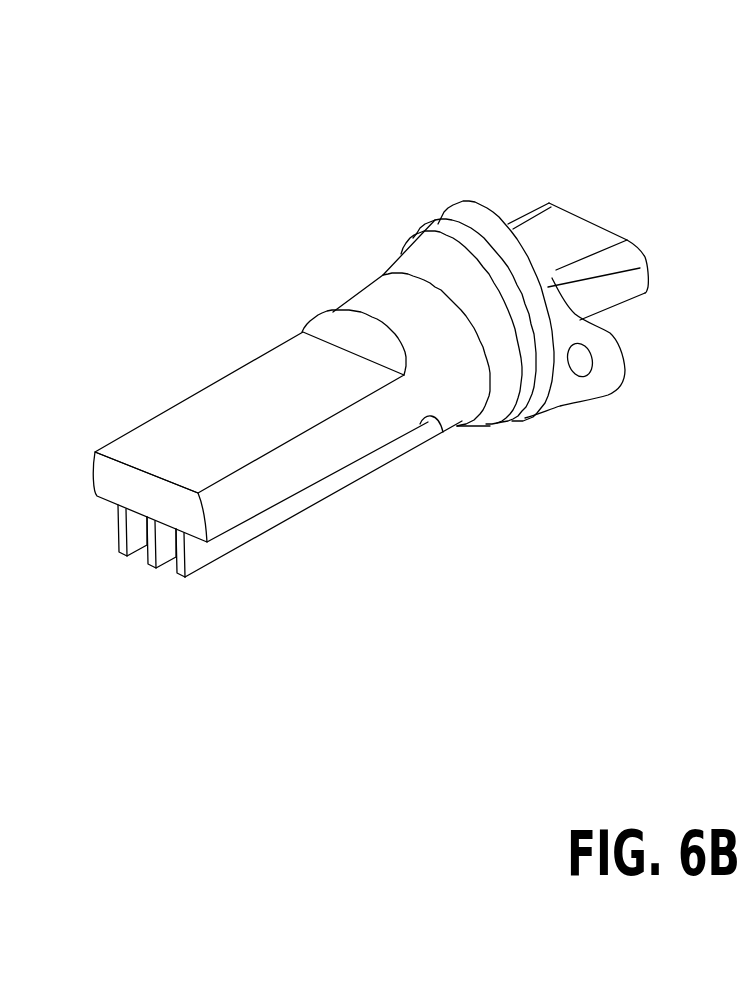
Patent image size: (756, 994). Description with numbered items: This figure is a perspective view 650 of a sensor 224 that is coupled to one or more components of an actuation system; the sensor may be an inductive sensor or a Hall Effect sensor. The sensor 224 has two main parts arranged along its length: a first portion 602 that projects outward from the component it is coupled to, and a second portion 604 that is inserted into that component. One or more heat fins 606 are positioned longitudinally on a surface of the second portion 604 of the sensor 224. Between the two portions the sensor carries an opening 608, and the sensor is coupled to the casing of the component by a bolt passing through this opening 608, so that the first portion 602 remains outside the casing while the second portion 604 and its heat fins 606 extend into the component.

The perspective view 650 is at (594, 135).
The sensor 224 is at (298, 173).
The second portion 604 is at (268, 378).
The heat fins 606 is at (197, 565).
The first portion 602 is at (623, 289).
The opening 608 is at (587, 367).